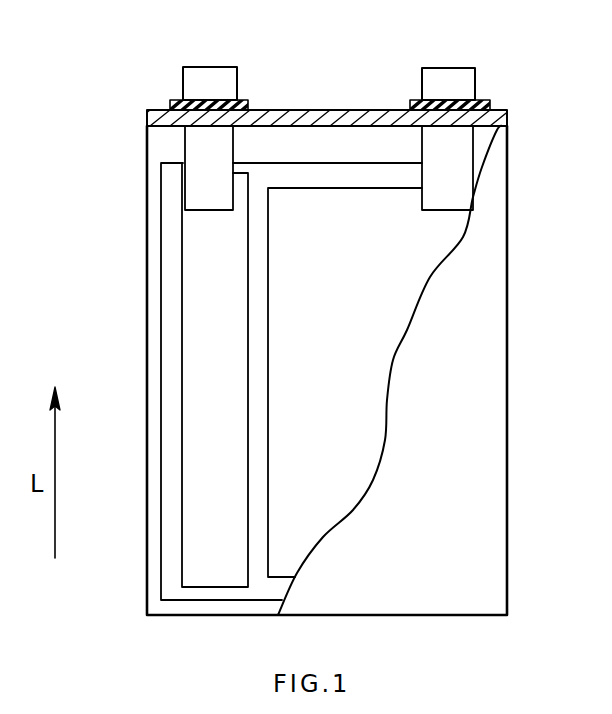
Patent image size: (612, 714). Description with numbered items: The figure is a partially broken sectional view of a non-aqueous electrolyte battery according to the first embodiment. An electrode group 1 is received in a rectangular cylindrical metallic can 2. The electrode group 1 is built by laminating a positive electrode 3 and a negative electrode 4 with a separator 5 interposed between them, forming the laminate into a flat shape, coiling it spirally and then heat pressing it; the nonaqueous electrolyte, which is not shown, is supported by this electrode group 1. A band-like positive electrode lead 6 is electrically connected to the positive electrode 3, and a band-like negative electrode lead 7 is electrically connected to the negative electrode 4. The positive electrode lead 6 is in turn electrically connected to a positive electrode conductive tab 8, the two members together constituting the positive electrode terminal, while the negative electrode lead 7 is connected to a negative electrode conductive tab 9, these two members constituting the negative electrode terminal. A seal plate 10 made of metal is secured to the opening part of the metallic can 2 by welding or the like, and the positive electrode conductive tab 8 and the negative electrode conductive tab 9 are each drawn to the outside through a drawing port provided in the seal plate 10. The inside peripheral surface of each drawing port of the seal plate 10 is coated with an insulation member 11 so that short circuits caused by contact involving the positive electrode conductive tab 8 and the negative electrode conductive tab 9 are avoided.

The electrode group 1 is at (372, 150).
The metallic can 2 is at (492, 460).
The positive electrode 3 is at (192, 343).
The negative electrode 4 is at (313, 228).
The separator 5 is at (255, 447).
The positive electrode lead 6 is at (190, 150).
The negative electrode lead 7 is at (462, 152).
The positive electrode conductive tab 8 is at (205, 80).
The negative electrode conductive tab 9 is at (452, 77).
The seal plate 10 is at (158, 108).
The insulation member 11 is at (245, 100).